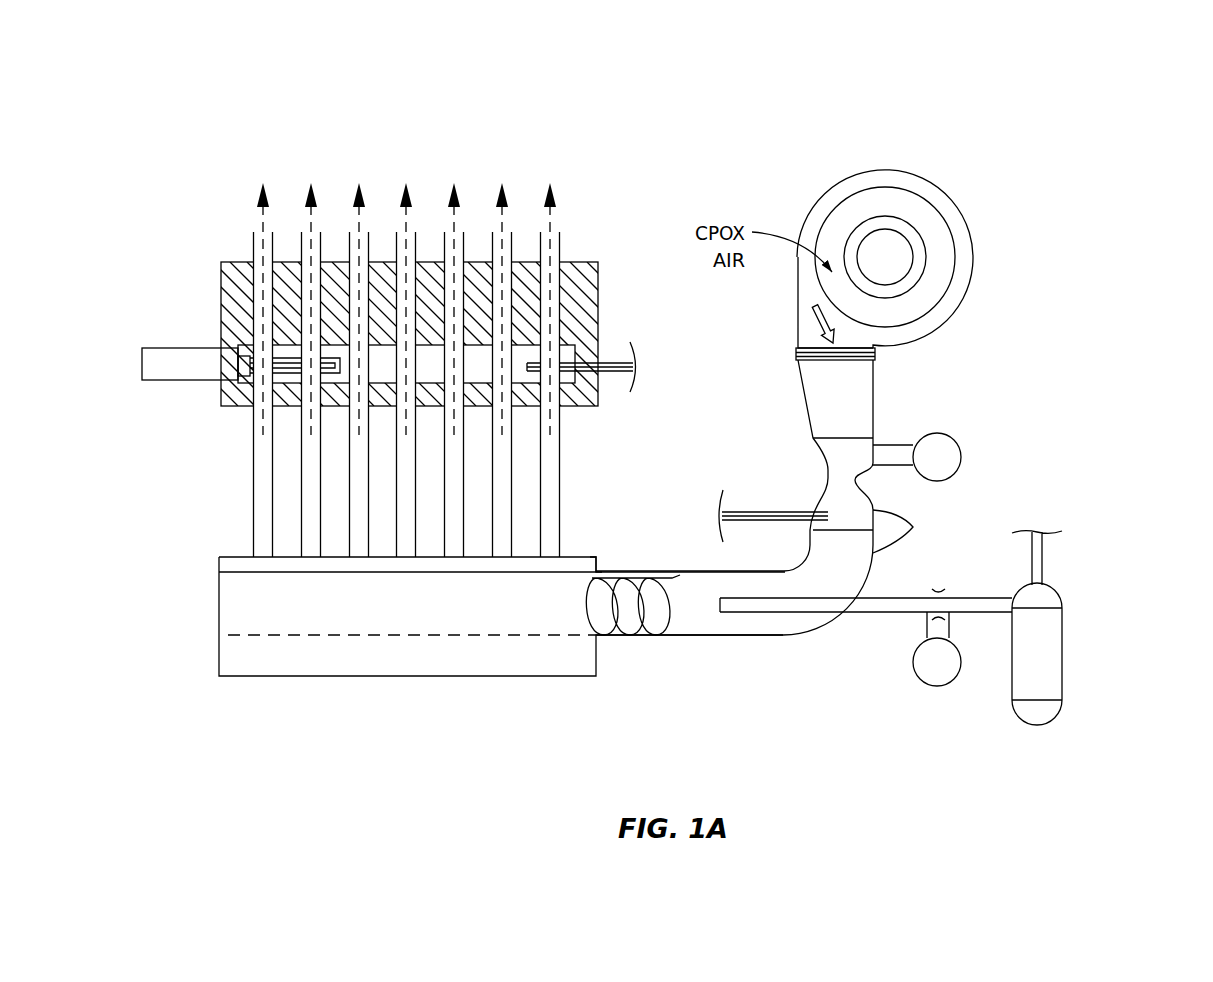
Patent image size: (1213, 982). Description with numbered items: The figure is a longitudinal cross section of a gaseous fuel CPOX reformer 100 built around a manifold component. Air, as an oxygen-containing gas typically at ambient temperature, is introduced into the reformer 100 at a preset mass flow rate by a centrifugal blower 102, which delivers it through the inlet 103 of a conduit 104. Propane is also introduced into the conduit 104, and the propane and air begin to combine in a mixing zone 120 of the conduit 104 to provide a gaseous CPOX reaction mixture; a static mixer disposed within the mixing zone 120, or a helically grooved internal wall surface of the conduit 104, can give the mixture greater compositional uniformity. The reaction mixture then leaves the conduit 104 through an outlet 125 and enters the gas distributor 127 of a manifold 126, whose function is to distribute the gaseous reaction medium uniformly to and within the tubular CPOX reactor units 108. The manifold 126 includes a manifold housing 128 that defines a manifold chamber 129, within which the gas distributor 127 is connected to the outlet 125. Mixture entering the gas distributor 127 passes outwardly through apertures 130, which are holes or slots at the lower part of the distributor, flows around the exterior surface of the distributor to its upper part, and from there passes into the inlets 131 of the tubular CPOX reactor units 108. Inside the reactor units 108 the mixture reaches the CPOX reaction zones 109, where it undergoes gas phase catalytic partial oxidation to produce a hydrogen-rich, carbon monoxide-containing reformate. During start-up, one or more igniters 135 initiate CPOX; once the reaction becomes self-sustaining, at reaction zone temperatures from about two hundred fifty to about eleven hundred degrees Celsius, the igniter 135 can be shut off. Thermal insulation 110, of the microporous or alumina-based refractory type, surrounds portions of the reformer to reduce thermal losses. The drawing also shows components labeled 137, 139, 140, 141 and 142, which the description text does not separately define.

The gaseous fuel CPOX reformer 100 is at (458, 78).
The centrifugal blower 102 is at (973, 252).
The inlet 103 is at (842, 418).
The conduit 104 is at (915, 527).
The tubular CPOX reactor units 108 is at (562, 490).
The CPOX reaction zones 109 is at (468, 297).
The thermal insulation 110 is at (578, 270).
The mixing zone 120 is at (645, 615).
The outlet 125 is at (588, 615).
The manifold 126 is at (280, 677).
The gas distributor 127 is at (403, 608).
The manifold housing 128 is at (597, 562).
The manifold chamber 129 is at (245, 657).
The apertures 130 is at (285, 632).
The inlets 131 is at (312, 548).
The igniter 135 is at (158, 348).
The heating element coil 137 is at (393, 371).
The igniter tip 139 is at (248, 355).
The thermocouple 140 is at (622, 358).
The gaseous fuel line 141 is at (882, 612).
The air-fuel mixture conduit 142 is at (708, 600).